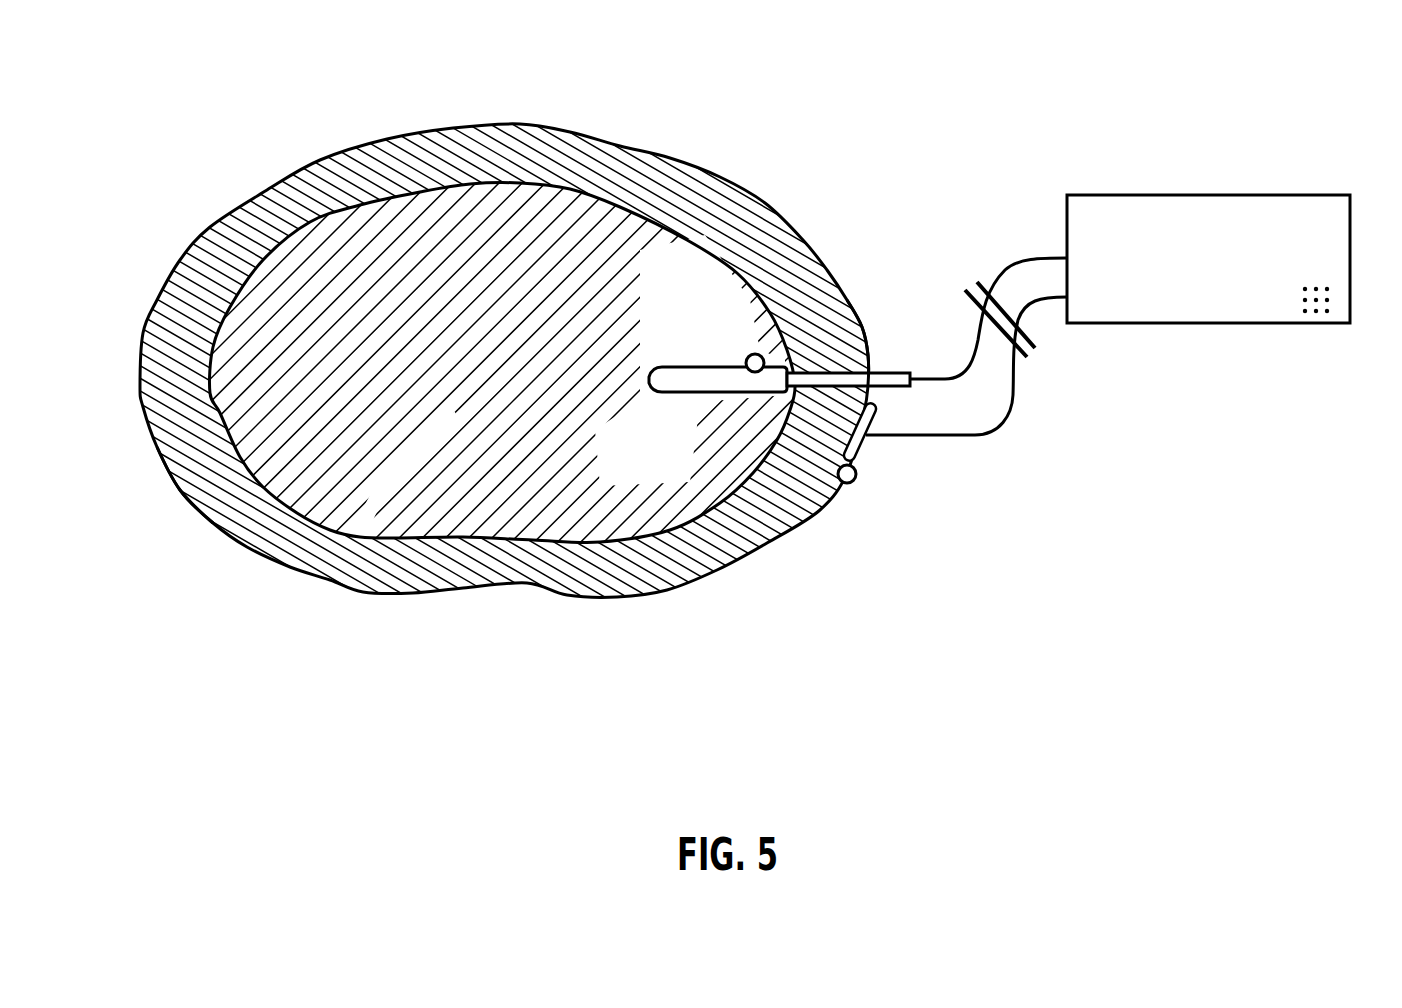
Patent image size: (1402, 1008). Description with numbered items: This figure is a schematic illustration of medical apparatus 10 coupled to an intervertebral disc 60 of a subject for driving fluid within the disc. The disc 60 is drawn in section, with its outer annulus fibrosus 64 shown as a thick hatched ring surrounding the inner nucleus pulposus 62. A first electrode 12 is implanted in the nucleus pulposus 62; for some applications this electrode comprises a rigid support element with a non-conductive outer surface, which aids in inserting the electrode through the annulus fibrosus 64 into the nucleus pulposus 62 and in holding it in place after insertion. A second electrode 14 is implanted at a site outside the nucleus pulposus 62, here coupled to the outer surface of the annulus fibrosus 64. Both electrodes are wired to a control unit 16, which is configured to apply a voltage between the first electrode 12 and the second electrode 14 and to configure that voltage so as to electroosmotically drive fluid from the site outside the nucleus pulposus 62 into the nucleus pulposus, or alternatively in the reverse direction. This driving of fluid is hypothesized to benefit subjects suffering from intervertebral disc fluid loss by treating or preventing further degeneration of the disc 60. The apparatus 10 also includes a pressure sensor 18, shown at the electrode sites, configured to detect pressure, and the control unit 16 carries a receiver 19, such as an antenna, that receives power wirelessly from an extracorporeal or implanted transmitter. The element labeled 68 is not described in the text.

The medical apparatus 10 is at (1121, 404).
The first electrode 12 is at (692, 394).
The second electrode 14 is at (857, 455).
The control unit 16 is at (1268, 196).
The pressure sensor 18 is at (746, 356).
The receiver 19 is at (1332, 288).
The intervertebral disc 60 is at (288, 158).
The nucleus pulposus 62 is at (458, 418).
The annulus fibrosus 64 is at (240, 506).
The wall opening 68 is at (837, 365).